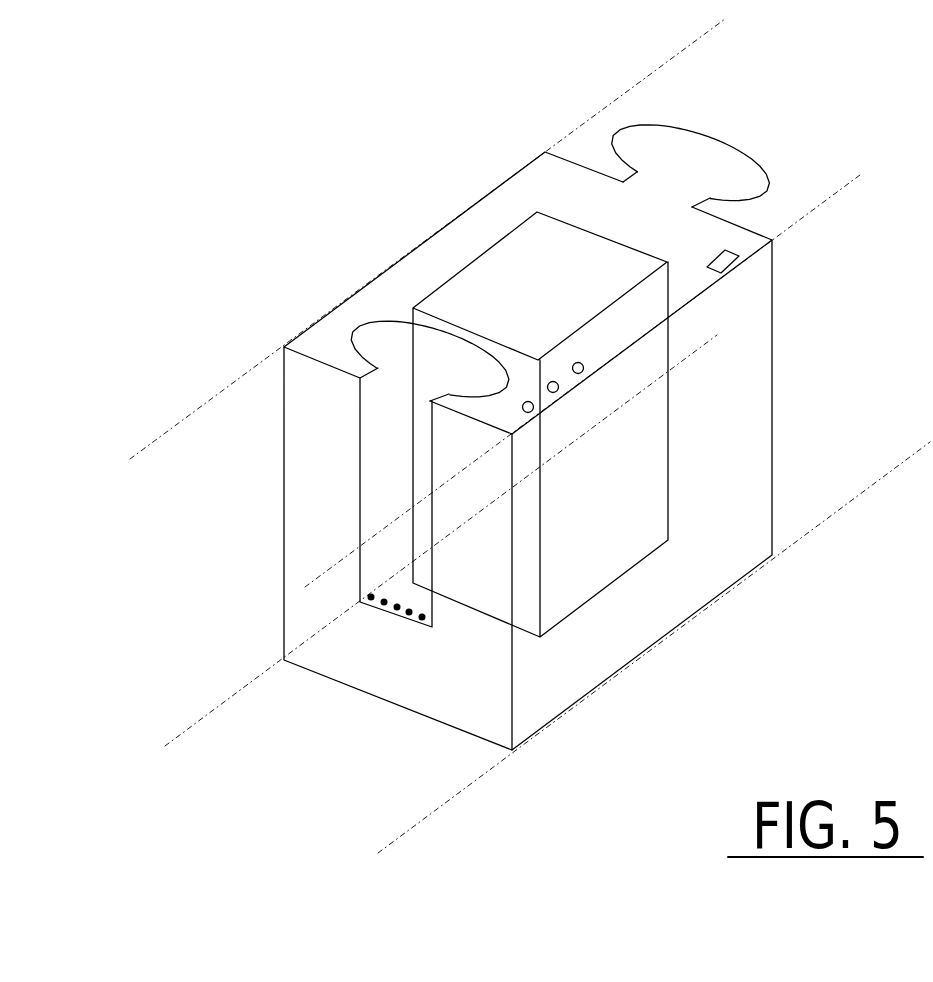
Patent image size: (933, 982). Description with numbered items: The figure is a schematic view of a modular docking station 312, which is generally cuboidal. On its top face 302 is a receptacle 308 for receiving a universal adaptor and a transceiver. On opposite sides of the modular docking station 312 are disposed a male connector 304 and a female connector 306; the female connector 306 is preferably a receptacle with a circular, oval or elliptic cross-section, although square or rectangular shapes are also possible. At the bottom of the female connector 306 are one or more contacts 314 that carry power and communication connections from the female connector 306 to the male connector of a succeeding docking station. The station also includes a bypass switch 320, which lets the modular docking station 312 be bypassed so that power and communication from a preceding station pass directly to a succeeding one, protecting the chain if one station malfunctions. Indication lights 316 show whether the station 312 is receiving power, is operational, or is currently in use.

The top face 302 is at (545, 183).
The male connector 304 is at (712, 153).
The female connector 306 is at (380, 330).
The receptacle 308 is at (507, 272).
The modular docking station 312 is at (114, 194).
The contacts 314 is at (392, 618).
The indication lights 316 is at (532, 412).
The bypass switch 320 is at (735, 265).